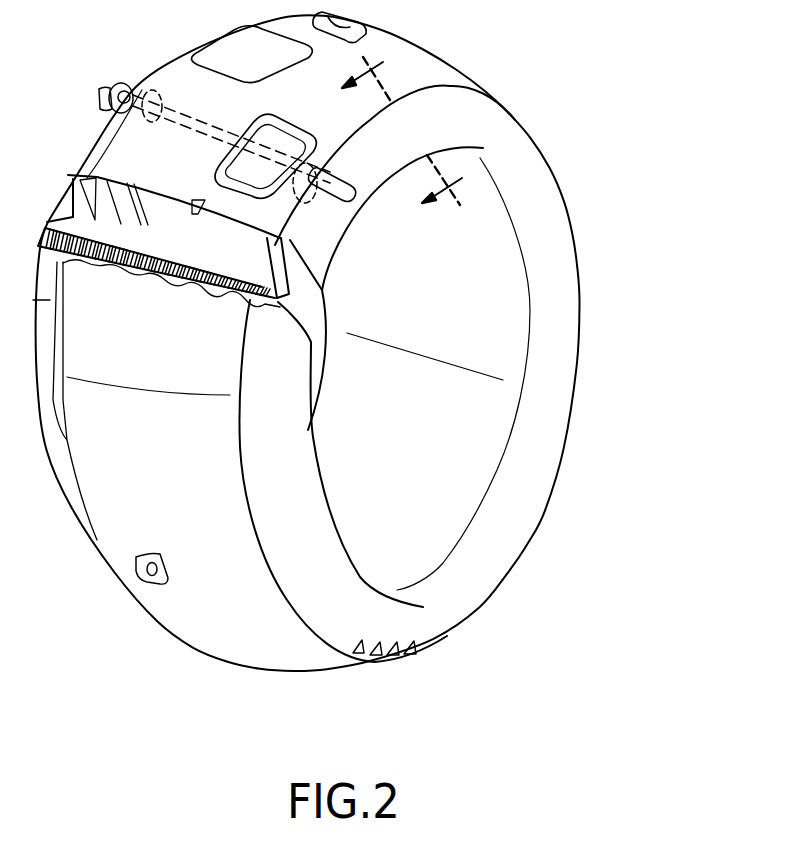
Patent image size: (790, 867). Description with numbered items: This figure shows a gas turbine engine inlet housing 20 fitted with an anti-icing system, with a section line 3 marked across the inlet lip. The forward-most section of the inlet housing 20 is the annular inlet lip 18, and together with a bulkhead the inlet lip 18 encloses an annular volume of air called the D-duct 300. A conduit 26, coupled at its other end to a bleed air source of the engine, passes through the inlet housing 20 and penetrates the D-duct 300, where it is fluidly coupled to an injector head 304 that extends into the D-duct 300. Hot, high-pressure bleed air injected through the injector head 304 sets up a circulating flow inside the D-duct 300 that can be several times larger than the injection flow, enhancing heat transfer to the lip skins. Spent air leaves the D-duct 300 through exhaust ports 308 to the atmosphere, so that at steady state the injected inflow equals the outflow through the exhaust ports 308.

The engine inlet housing 20 is at (335, 339).
The annular inlet lip 18 is at (554, 168).
The conduit 26 is at (174, 103).
The D-duct 300 is at (305, 289).
The injector head 304 is at (342, 197).
The exhaust ports 308 is at (400, 645).
The section line 3- 3 is at (410, 135).